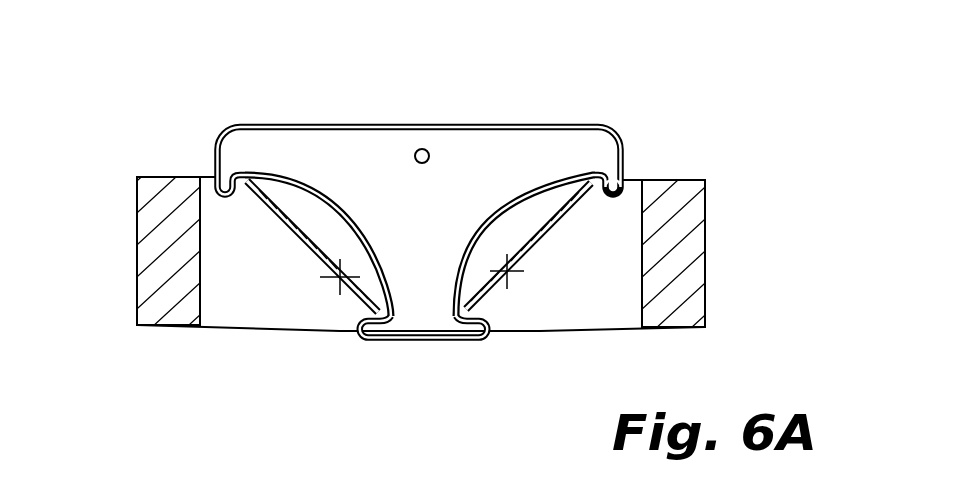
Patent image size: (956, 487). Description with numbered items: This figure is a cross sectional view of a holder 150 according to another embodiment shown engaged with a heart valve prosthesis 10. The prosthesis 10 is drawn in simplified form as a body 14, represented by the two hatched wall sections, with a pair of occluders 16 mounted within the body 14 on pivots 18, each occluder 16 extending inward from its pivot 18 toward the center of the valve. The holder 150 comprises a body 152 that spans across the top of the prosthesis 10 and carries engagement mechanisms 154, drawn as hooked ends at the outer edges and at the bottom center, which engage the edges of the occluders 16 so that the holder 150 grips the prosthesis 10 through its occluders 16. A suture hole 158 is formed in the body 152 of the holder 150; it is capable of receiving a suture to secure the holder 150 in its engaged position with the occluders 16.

The heart valve prosthesis 10 is at (391, 249).
The body 14 is at (137, 238).
The occluders 16 is at (297, 241).
The pivots 18 is at (338, 285).
The holder 150 is at (438, 216).
The body 152 is at (582, 149).
The engagement mechanisms 154 is at (228, 180).
The suture hole 158 is at (416, 149).